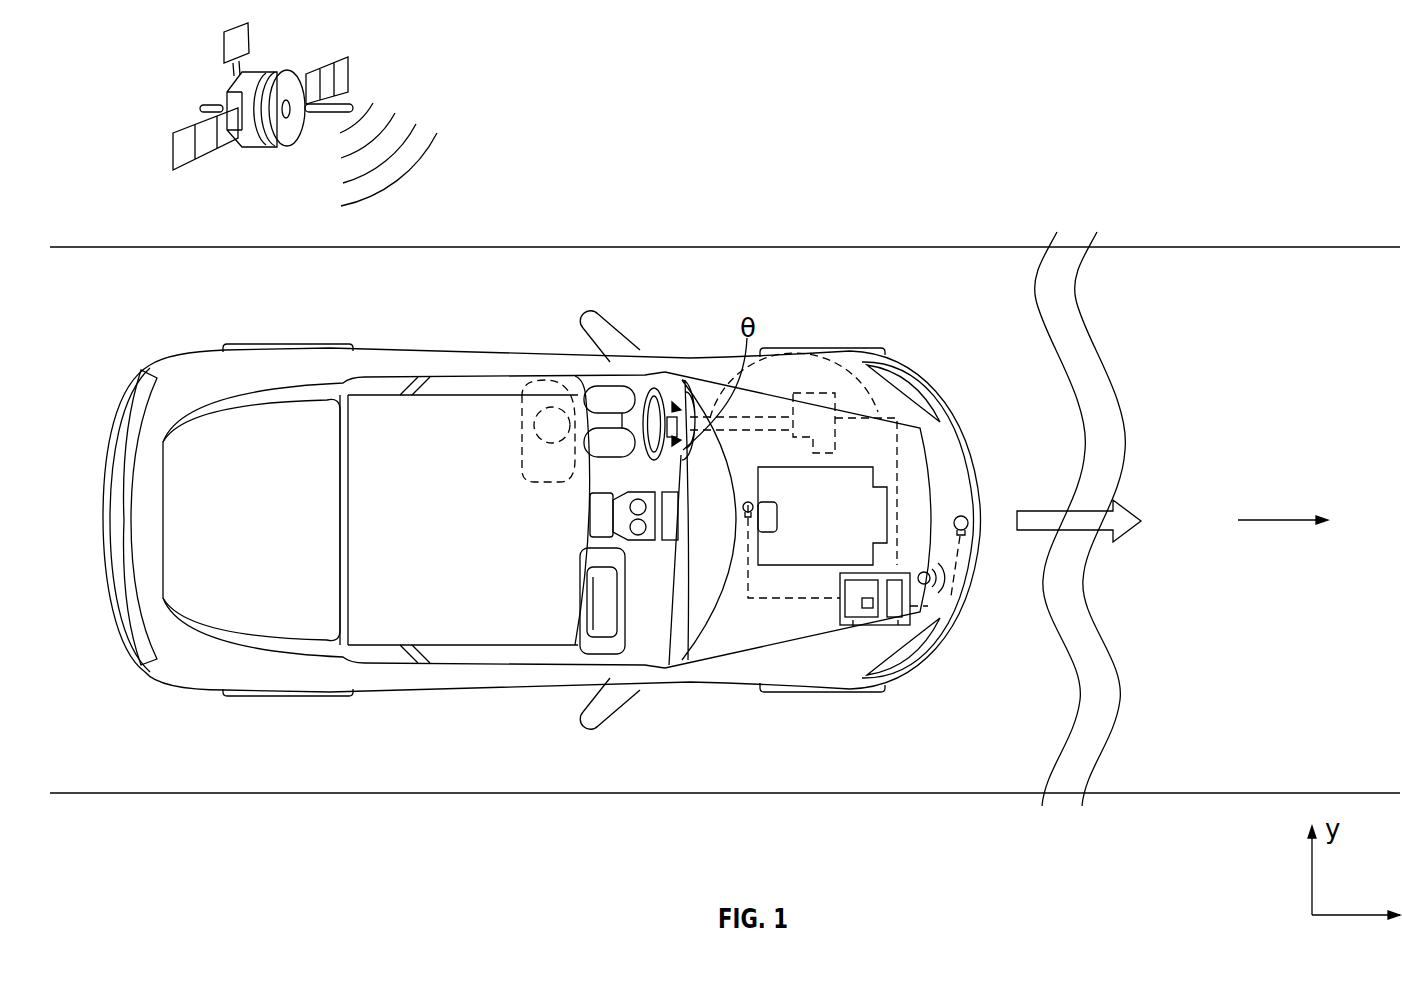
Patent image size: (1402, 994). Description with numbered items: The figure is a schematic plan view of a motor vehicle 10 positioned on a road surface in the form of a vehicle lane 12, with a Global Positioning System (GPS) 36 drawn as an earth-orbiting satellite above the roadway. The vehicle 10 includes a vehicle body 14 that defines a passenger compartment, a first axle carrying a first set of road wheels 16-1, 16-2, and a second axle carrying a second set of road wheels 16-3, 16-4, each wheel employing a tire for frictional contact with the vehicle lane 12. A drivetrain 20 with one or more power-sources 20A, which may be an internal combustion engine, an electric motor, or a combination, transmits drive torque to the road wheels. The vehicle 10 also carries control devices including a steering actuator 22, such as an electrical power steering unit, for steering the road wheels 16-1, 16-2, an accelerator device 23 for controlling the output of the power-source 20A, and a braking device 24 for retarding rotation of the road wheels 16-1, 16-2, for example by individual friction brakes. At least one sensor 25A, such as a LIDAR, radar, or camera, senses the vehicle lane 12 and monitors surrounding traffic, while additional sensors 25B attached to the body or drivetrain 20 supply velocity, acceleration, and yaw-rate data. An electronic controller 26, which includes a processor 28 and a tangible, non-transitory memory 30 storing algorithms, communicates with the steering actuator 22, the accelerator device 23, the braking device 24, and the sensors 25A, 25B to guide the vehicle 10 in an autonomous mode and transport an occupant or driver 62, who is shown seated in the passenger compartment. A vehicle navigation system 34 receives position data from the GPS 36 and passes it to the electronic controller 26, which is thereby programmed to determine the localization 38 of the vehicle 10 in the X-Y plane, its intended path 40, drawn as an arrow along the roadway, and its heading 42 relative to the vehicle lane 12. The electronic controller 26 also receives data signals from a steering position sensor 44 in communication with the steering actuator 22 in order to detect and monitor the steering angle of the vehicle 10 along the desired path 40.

The motor vehicle 10 is at (555, 331).
The vehicle lane 12 is at (143, 312).
The vehicle body 14 is at (667, 354).
The road wheel 16-1 is at (873, 347).
The road wheel 16-2 is at (770, 695).
The road wheel 16-3 is at (250, 345).
The road wheel 16-4 is at (250, 698).
The drivetrain 20 is at (881, 557).
The power-source 20A is at (850, 538).
The steering actuator 22 is at (835, 413).
The accelerator device 23 is at (700, 450).
The braking device 24 is at (657, 368).
The sensor 25A is at (967, 518).
The sensor 25B is at (748, 512).
The electronic controller 26 is at (898, 625).
The processor 28 is at (853, 627).
The memory 30 is at (928, 606).
The vehicle navigation system 34 is at (670, 548).
The global positioning system 36 is at (377, 67).
The localization 38 is at (862, 603).
The intended path 40 is at (1283, 515).
The heading 42 is at (1092, 541).
The steering position sensor 44 is at (805, 392).
The driver 62 is at (545, 375).